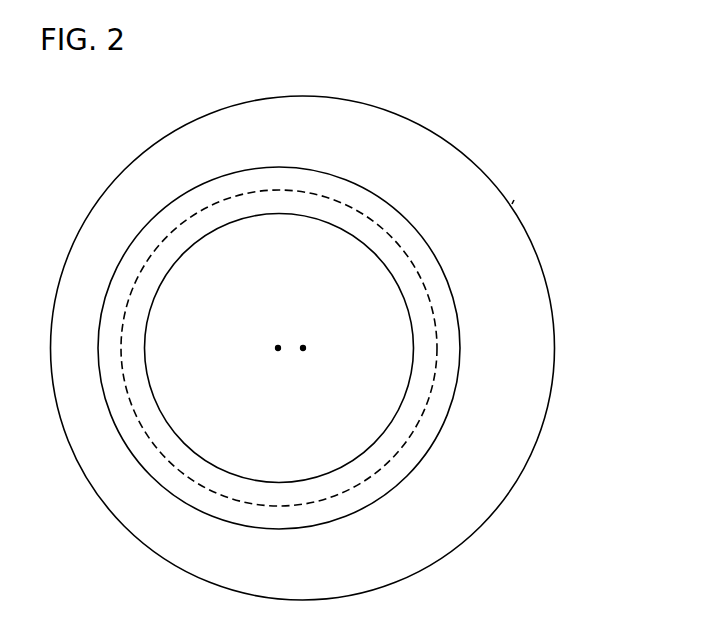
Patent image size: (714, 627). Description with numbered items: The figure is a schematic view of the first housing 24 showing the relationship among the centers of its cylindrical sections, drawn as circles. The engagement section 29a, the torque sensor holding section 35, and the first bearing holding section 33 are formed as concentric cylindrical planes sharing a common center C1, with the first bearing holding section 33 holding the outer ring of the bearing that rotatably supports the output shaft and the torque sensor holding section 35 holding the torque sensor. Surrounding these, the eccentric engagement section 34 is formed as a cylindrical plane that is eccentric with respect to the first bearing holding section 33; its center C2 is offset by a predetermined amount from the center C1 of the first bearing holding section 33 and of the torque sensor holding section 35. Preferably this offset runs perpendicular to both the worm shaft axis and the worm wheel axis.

The first housing 24 is at (442, 117).
The eccentric engagement section 34 is at (512, 204).
The first bearing holding section 33 is at (277, 166).
The engagement section 29a is at (198, 210).
The torque sensor holding section 35 is at (171, 265).
The center C1 is at (277, 352).
The center C2 is at (304, 352).